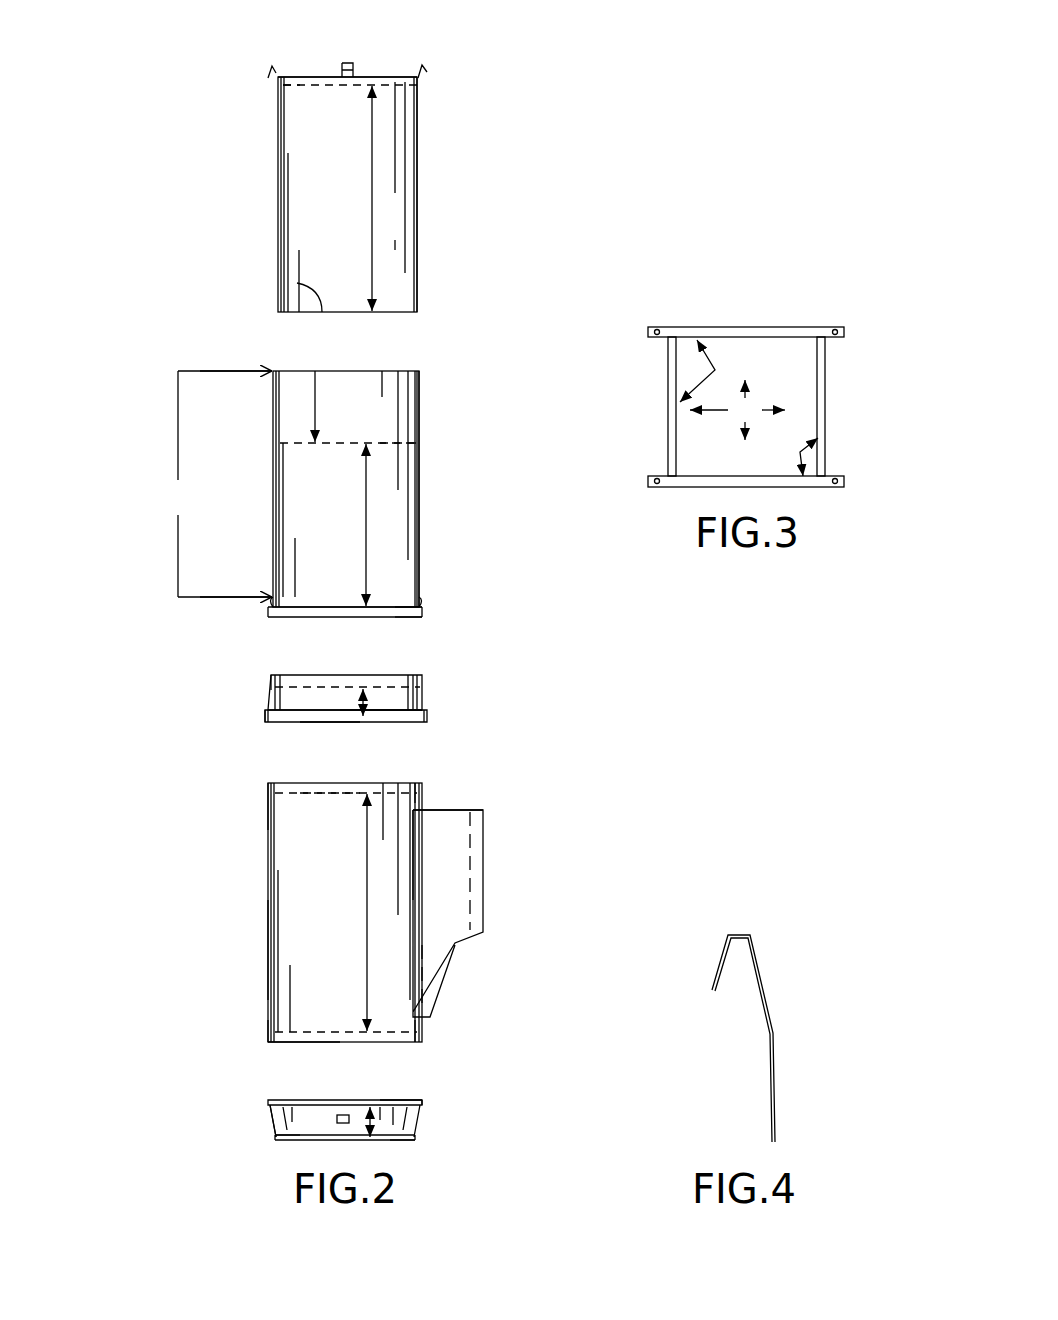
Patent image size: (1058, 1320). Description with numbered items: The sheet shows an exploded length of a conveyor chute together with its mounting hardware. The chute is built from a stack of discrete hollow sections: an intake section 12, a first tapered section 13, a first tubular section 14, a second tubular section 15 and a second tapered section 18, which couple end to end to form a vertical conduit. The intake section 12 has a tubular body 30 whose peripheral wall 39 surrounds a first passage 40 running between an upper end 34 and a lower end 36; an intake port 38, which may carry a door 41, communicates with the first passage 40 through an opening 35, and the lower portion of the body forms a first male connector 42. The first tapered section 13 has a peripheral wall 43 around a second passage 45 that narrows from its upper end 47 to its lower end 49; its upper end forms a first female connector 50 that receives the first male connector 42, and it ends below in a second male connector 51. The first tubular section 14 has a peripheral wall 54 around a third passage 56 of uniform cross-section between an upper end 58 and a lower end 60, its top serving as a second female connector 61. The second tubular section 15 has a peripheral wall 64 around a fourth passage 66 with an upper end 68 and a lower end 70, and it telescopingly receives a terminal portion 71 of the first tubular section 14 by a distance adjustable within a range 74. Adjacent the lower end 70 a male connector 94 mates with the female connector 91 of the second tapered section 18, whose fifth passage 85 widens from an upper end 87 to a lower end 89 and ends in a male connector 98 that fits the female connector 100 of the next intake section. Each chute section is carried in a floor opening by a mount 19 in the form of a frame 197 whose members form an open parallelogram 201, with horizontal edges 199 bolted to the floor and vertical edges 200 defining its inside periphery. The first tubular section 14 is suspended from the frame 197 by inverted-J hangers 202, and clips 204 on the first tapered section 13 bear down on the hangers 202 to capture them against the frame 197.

In FIG. 2, the intake section 12 is at (320, 915).
In FIG. 2, the first tapered section 13 is at (318, 1129).
In FIG. 2, the first tubular section 14 is at (317, 219).
In FIG. 2, the second tubular section 15 is at (308, 518).
In FIG. 2, the second tapered section 18 is at (316, 713).
In FIG. 3, the mount 19 is at (735, 359).
In FIG. 2, the tubular body 30 is at (268, 950).
In FIG. 2, the upper end 34 is at (278, 794).
In FIG. 2, the opening 35 is at (437, 808).
In FIG. 2, the lower end 36 is at (266, 1043).
In FIG. 2, the intake port 38 is at (413, 880).
In FIG. 2, the peripheral wall 39 is at (427, 803).
In FIG. 2, the first passage 40 is at (367, 912).
In FIG. 2, the door 41 is at (475, 880).
In FIG. 2, the first male connector 42 is at (293, 1040).
In FIG. 2, the peripheral wall 43 is at (422, 1112).
In FIG. 2, the second passage 45 is at (382, 1122).
In FIG. 2, the upper end 47 is at (280, 1108).
In FIG. 2, the lower end 49 is at (285, 1141).
In FIG. 2, the first female connector 50 is at (395, 1103).
In FIG. 2, the second male connector 51 is at (397, 1141).
In FIG. 2, the peripheral wall 54 is at (417, 153).
In FIG. 2, the third passage 56 is at (364, 198).
In FIG. 2, the upper end 58 is at (319, 87).
In FIG. 2, the lower end 60 is at (297, 283).
In FIG. 2, the second female connector 61 is at (296, 87).
In FIG. 2, the peripheral wall 64 is at (420, 494).
In FIG. 2, the fourth passage 66 is at (362, 525).
In FIG. 2, the upper end 68 is at (395, 438).
In FIG. 2, the lower end 70 is at (395, 616).
In FIG. 2, the terminal portion 71 is at (389, 245).
In FIG. 2, the range 74 is at (209, 484).
In FIG. 2, the fifth passage 85 is at (365, 707).
In FIG. 2, the upper end 87 is at (281, 683).
In FIG. 2, the lower end 89 is at (278, 725).
In FIG. 2, the female connector 91 is at (388, 682).
In FIG. 2, the male connector 94 is at (407, 613).
In FIG. 2, the male connector 98 is at (328, 718).
In FIG. 2, the female connector 100 is at (335, 787).
In FIG. 3, the frame 197 is at (732, 385).
In FIG. 3, the horizontal edges 199 is at (743, 332).
In FIG. 3, the vertical edges 200 is at (749, 408).
In FIG. 3, the open parallelogram 201 is at (737, 410).
In FIG. 2, the hanger 202 is at (275, 67).
In FIG. 4, the hanger 202 is at (770, 1008).
In FIG. 2, the clip 204 is at (338, 1122).